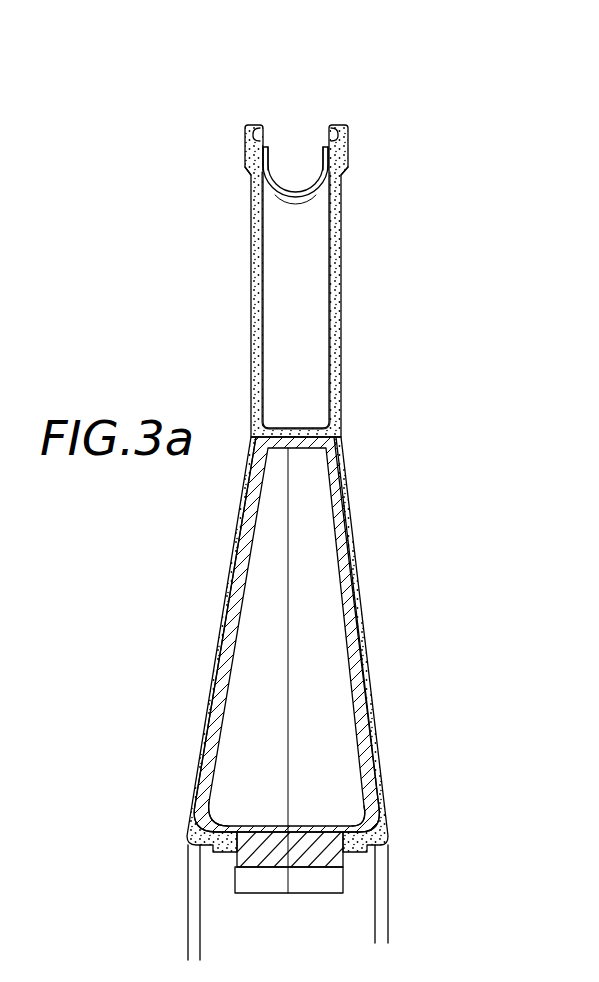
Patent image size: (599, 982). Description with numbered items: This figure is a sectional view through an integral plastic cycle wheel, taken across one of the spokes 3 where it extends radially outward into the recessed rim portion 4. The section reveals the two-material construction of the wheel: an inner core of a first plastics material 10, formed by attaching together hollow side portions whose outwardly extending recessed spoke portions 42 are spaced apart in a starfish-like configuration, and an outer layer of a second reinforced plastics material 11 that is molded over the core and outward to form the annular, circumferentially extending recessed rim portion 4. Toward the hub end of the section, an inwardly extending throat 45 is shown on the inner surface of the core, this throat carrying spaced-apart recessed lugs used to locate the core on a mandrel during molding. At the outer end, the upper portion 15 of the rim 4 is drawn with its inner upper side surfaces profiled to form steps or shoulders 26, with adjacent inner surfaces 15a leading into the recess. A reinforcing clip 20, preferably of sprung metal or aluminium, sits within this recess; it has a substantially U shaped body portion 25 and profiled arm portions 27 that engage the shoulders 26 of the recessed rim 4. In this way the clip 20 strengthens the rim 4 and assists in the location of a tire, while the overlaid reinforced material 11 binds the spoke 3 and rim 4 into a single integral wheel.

The spoke 3 is at (310, 698).
The recessed rim portion 4 is at (310, 155).
The first plastics material 10 is at (255, 608).
The second reinforced plastics material 11 is at (252, 348).
The upper portion of the rim 15 is at (364, 313).
The head shoulder of tube wall 15a is at (240, 188).
The reinforcing clip 20 is at (343, 88).
The U shaped body portion 25 is at (290, 196).
The shoulder 26 is at (245, 158).
The profiled arm portion 27 is at (266, 142).
The recessed spoke portion 42 is at (215, 778).
The inwardly extending throat 45 is at (257, 844).